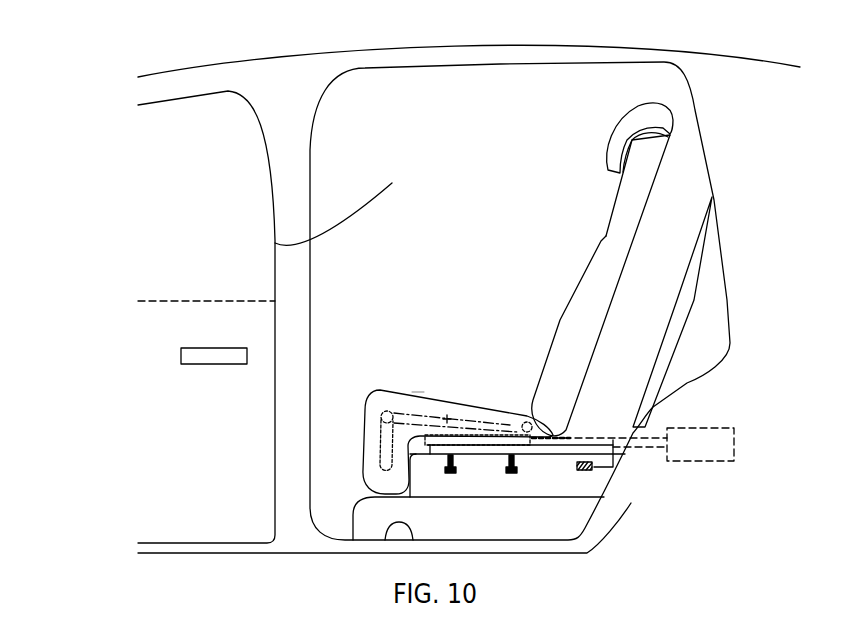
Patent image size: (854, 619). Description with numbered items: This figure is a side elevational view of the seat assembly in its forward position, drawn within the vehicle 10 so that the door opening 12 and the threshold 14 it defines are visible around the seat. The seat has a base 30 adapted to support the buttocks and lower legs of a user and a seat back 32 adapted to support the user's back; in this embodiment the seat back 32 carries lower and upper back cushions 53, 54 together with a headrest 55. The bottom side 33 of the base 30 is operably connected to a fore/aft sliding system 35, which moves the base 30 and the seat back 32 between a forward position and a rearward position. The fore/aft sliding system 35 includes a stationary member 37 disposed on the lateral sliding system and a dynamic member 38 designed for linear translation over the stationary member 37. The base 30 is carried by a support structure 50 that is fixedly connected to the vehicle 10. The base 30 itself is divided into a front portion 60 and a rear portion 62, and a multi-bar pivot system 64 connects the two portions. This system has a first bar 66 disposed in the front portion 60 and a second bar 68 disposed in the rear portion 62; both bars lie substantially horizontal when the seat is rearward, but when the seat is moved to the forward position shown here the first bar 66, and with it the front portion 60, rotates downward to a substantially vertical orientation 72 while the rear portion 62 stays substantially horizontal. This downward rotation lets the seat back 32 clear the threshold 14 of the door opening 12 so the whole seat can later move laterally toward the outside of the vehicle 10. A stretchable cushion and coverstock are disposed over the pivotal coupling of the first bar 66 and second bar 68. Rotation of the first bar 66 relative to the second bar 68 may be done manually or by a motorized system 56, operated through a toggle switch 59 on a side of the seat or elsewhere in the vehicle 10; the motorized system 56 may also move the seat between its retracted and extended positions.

The vehicle 10 is at (143, 63).
The door opening 12 is at (275, 243).
The threshold 14 is at (396, 527).
The base 30 is at (489, 395).
The seat back 32 is at (575, 291).
The bottom side 33 is at (463, 437).
The fore/aft sliding system 35 is at (467, 373).
The stationary member 37 is at (485, 447).
The dynamic member 38 is at (513, 437).
The support structure 50 is at (440, 483).
The lower back cushion 53 is at (557, 328).
The upper back cushion 54 is at (613, 207).
The headrest 55 is at (627, 114).
The motorized system 56 is at (720, 427).
The toggle switch 59 is at (588, 471).
The front portion 60 is at (360, 485).
The rear portion 62 is at (490, 410).
The multi-bar pivot system 64 is at (418, 396).
The first bar 66 is at (375, 440).
The second bar 68 is at (444, 410).
The substantially vertical orientation 72 is at (362, 409).